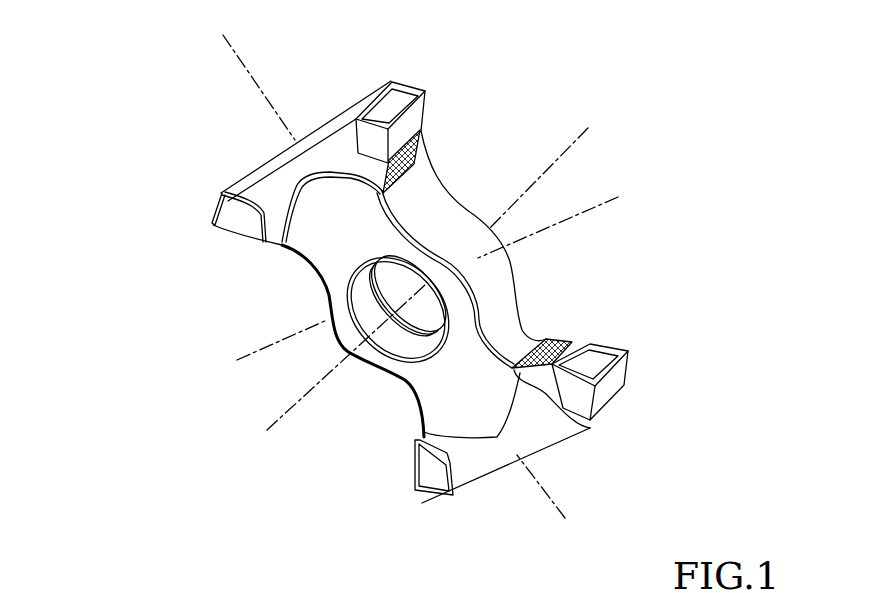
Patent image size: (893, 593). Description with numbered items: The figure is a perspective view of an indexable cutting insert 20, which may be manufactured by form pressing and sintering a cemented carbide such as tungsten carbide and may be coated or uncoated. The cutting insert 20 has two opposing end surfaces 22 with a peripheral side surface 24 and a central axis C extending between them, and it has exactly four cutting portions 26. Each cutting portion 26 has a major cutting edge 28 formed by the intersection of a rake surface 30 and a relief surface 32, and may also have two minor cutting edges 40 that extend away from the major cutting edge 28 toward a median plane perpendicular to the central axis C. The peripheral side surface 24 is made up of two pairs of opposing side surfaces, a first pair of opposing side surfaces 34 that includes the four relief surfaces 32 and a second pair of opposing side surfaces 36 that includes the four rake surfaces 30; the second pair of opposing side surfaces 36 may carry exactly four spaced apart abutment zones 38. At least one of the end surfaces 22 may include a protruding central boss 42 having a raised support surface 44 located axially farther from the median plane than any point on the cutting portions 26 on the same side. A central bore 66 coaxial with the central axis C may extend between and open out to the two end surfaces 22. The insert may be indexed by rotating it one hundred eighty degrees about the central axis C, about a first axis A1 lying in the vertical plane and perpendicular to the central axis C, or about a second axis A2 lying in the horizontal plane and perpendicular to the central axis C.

The cutting insert 20 is at (565, 185).
The end surfaces 22 is at (267, 195).
The peripheral side surface 24 is at (250, 167).
The cutting portions 26 is at (389, 97).
The major cutting edge 28 is at (377, 113).
The rake surface 30 is at (403, 127).
The relief surface 32 is at (380, 113).
The first pair of opposing side surfaces 34 is at (285, 148).
The second pair of opposing side surfaces 36 is at (507, 327).
The abutment zones 38 is at (417, 154).
The minor cutting edges 40 is at (307, 147).
The central boss 42 is at (460, 407).
The raised support surface 44 is at (490, 393).
The central bore 66 is at (402, 280).
The first axis A1 is at (428, 278).
The second axis A2 is at (391, 281).
The central axis C is at (429, 283).